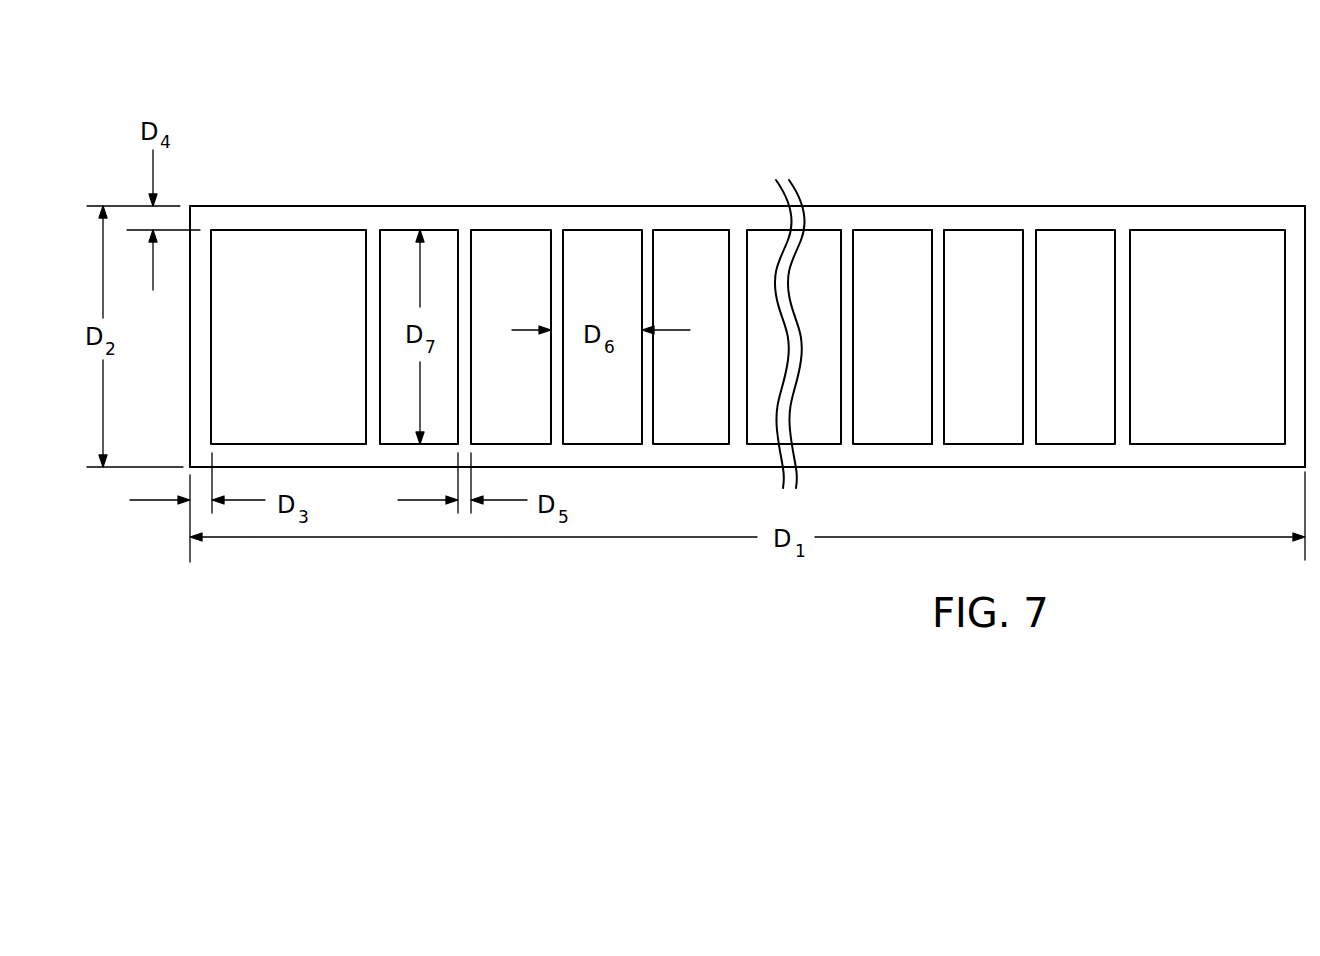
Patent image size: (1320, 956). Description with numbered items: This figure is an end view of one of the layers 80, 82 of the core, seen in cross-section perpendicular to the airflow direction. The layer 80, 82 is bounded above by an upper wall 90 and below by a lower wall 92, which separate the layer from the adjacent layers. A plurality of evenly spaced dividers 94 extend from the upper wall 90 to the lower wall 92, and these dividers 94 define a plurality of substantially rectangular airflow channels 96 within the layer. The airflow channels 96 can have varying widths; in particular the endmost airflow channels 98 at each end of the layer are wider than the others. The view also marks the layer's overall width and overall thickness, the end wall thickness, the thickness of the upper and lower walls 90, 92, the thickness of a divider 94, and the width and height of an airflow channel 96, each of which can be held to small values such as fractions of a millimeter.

The layer 80 is at (1055, 177).
The layer 82 is at (747, 336).
The upper wall 90 is at (710, 212).
The lower wall 92 is at (683, 455).
The divider 94 is at (939, 307).
The airflow channels 96 is at (512, 252).
The endmost airflow channels 98 is at (287, 263).